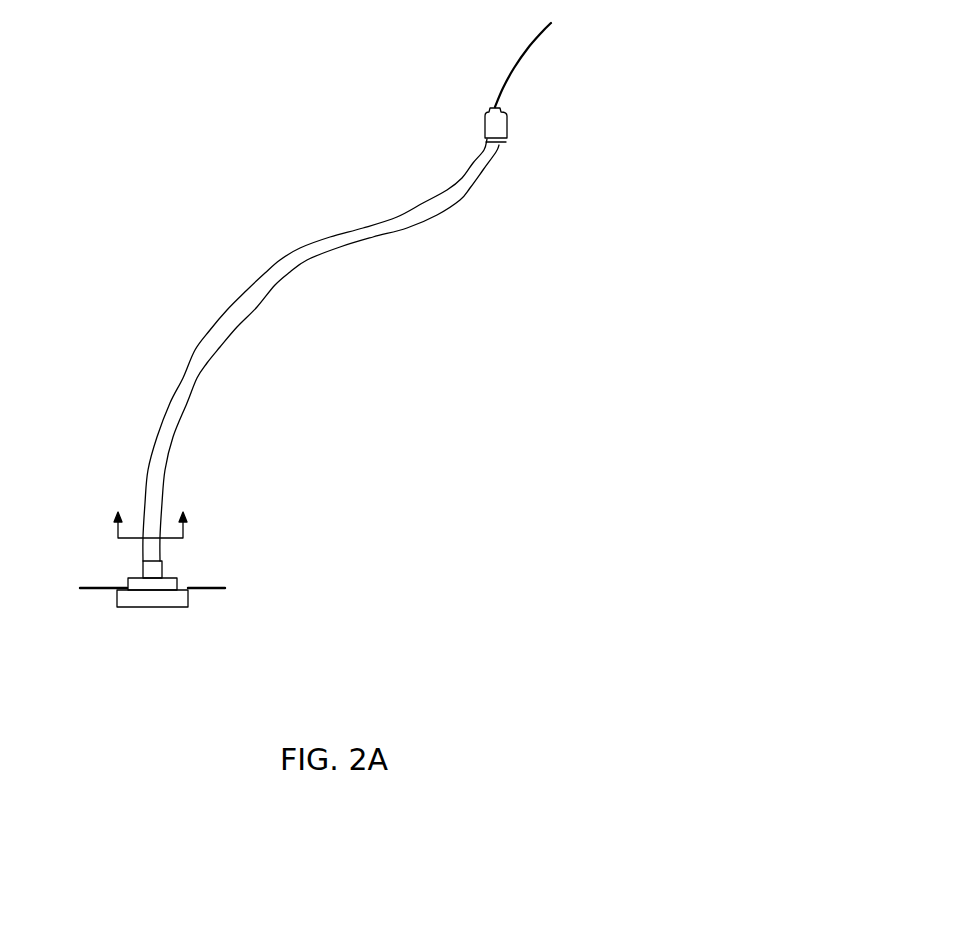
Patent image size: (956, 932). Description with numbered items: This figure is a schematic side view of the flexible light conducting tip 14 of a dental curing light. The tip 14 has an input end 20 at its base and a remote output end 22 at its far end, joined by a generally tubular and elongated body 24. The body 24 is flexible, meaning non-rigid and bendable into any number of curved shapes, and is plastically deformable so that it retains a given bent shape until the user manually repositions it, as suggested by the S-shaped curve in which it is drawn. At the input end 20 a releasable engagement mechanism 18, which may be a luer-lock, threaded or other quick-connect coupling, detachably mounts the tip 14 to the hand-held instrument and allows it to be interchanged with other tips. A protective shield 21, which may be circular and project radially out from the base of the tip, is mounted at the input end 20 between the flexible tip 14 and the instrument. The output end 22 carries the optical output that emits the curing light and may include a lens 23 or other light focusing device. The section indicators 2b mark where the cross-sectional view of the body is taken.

The light conducting tip 14 is at (182, 344).
The releasable engagement mechanism 18 is at (188, 582).
The input end 20 is at (148, 574).
The protective shield 21 is at (217, 592).
The remote output end 22 is at (503, 127).
The lens 23 is at (543, 54).
The tubular elongated body 24 is at (225, 325).
The section line 2b is at (148, 512).